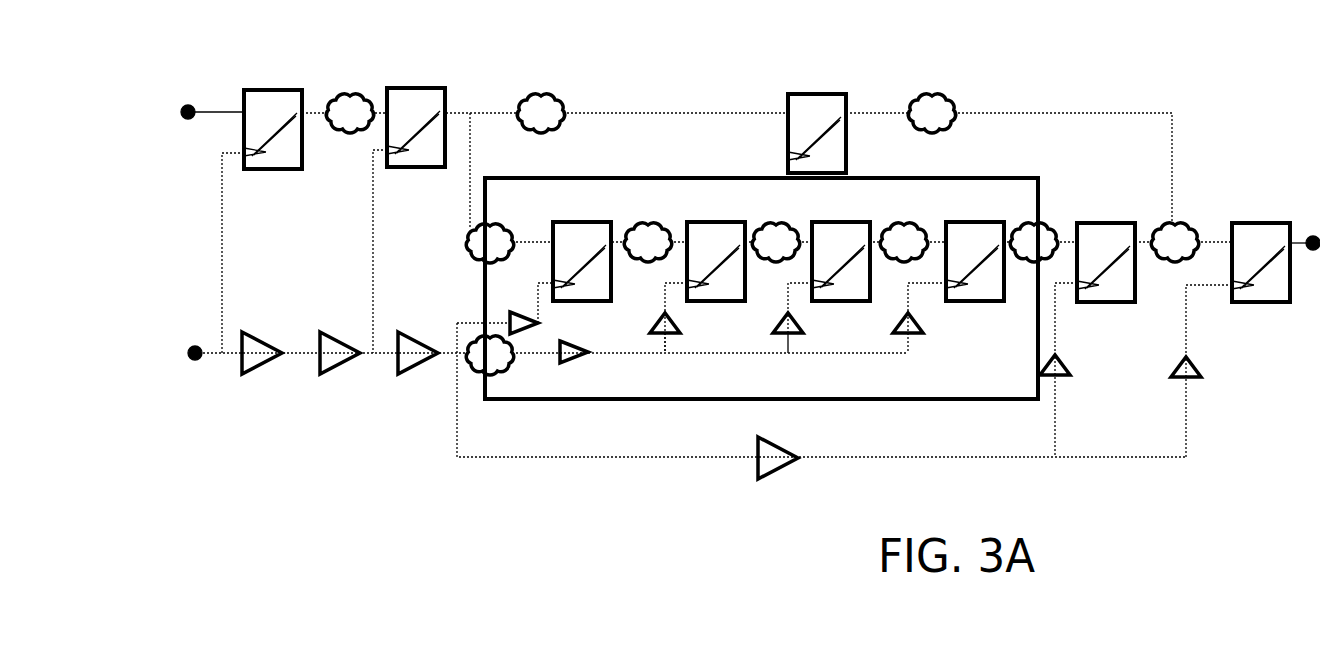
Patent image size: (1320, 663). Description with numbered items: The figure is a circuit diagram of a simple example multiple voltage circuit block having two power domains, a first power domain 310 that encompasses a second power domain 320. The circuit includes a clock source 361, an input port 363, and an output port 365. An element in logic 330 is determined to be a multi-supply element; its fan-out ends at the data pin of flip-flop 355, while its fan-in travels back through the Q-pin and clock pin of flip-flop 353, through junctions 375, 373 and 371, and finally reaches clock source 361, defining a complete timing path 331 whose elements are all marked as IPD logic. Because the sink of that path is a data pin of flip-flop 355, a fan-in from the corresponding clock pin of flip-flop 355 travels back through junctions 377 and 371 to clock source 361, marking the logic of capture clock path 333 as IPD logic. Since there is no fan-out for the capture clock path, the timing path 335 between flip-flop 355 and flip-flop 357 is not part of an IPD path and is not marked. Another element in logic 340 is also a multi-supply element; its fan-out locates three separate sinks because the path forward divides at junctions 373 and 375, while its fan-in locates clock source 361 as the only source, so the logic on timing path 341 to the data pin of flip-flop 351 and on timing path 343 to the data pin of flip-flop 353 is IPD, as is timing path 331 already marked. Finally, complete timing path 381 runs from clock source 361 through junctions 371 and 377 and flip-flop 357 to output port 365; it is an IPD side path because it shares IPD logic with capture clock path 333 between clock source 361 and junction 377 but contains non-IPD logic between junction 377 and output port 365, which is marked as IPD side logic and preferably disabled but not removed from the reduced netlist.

The first power domain 310 is at (325, 40).
The second power domain 320 is at (555, 213).
The logic 330 is at (1030, 262).
The timing path 331 is at (910, 344).
The capture clock path 333 is at (1058, 401).
The timing path 335 is at (1213, 240).
The logic 340 is at (502, 364).
The timing path 341 is at (668, 306).
The timing path 343 is at (791, 306).
The flip-flop 351 is at (820, 221).
The flip-flop 353 is at (955, 221).
The flip-flop 355 is at (1108, 222).
The flip-flop 357 is at (1259, 222).
The clock source 361 is at (196, 362).
The input port 363 is at (191, 106).
The output port 365 is at (1313, 251).
The junction 371 is at (447, 355).
The junction 373 is at (666, 357).
The junction 375 is at (789, 357).
The junction 377 is at (1057, 460).
The complete timing path 381 is at (1189, 404).